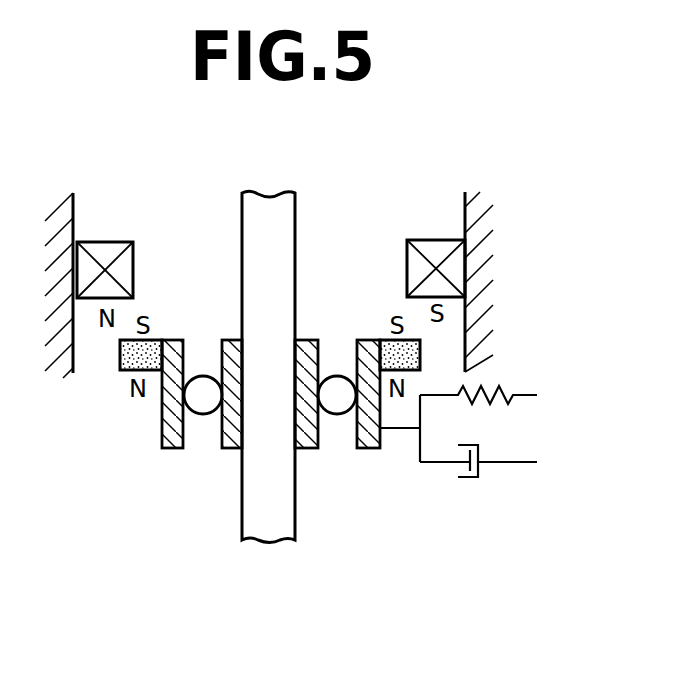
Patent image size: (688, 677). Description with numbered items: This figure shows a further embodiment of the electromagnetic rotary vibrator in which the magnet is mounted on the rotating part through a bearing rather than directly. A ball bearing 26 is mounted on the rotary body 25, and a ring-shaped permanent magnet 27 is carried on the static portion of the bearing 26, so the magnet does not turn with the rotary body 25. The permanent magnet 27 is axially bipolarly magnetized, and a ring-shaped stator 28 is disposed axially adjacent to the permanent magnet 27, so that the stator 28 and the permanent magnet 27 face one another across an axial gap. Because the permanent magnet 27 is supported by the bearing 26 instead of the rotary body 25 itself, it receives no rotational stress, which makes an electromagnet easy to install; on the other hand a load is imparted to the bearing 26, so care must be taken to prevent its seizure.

The rotary body 25 is at (283, 222).
The ball bearing 26 is at (206, 452).
The permanent magnet 27 is at (120, 362).
The stator 28 is at (423, 244).